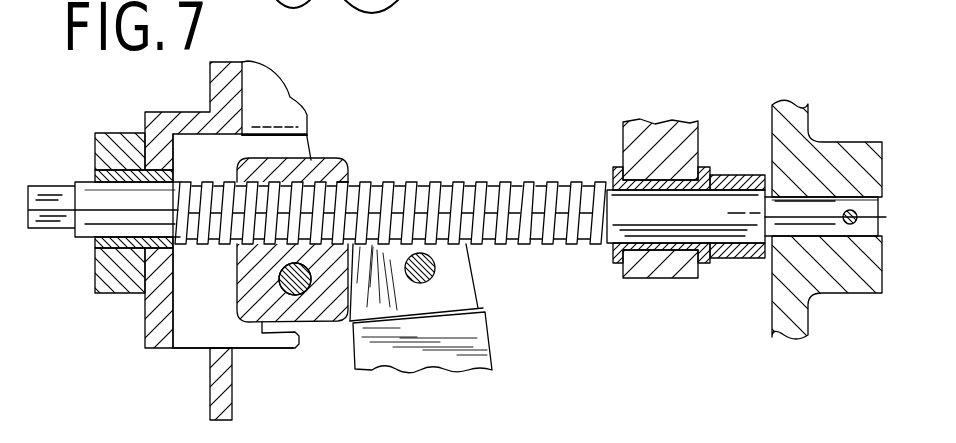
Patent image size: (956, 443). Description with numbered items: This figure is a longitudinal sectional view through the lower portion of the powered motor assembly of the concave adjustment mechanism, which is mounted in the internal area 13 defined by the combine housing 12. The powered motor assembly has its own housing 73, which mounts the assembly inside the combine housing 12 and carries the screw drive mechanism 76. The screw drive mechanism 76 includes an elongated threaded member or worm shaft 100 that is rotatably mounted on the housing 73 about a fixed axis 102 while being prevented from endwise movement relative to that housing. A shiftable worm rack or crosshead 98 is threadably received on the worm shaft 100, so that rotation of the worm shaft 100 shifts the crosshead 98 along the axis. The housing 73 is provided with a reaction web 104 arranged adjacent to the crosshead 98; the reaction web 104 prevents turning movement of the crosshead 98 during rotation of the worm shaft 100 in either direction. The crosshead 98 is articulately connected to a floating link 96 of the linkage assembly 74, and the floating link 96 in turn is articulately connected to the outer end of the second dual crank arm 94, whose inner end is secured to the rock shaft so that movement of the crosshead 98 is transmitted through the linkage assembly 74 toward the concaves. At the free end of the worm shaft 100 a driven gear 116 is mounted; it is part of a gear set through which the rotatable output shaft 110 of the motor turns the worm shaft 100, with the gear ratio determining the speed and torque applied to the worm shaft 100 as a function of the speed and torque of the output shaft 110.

The housing 12 is at (222, 400).
The internal area 13 is at (233, 374).
The housing 73 is at (160, 123).
The linkage assembly 74 is at (456, 335).
The screw drive mechanism 76 is at (478, 150).
The second dual crank arm 94 is at (465, 325).
The floating link 96 is at (440, 297).
The crosshead 98 is at (330, 168).
The worm shaft 100 is at (553, 243).
The fixed axis 102 is at (347, 185).
The reaction web 104 is at (192, 324).
The output shaft 110 is at (713, 205).
The driven gear 116 is at (808, 133).